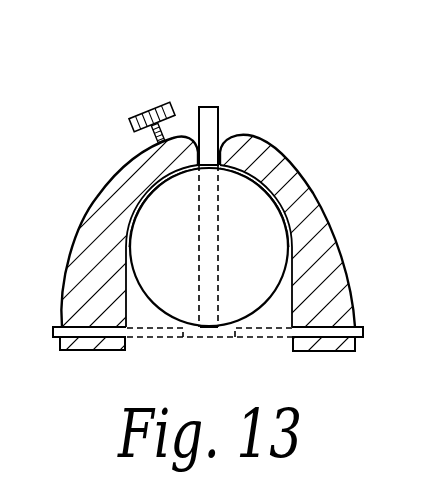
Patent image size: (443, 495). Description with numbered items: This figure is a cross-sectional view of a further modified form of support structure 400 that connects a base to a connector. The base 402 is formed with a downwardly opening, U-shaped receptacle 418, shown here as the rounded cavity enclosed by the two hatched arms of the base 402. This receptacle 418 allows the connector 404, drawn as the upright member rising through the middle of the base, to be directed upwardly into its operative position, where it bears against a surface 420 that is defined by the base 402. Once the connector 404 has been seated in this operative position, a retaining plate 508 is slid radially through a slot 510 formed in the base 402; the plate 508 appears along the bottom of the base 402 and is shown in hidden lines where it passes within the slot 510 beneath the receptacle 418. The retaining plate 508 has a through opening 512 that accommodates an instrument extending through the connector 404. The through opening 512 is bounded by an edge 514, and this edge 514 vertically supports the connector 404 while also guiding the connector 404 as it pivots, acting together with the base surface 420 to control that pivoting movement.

The support structure 400 is at (257, 122).
The base 402 is at (288, 177).
The connector 404 is at (199, 112).
The U-shaped receptacle 418 is at (292, 298).
The surface 420 is at (148, 192).
The retaining plate 508 is at (165, 338).
The slot 510 is at (92, 327).
The through opening 512 is at (203, 338).
The edge 514 is at (230, 322).